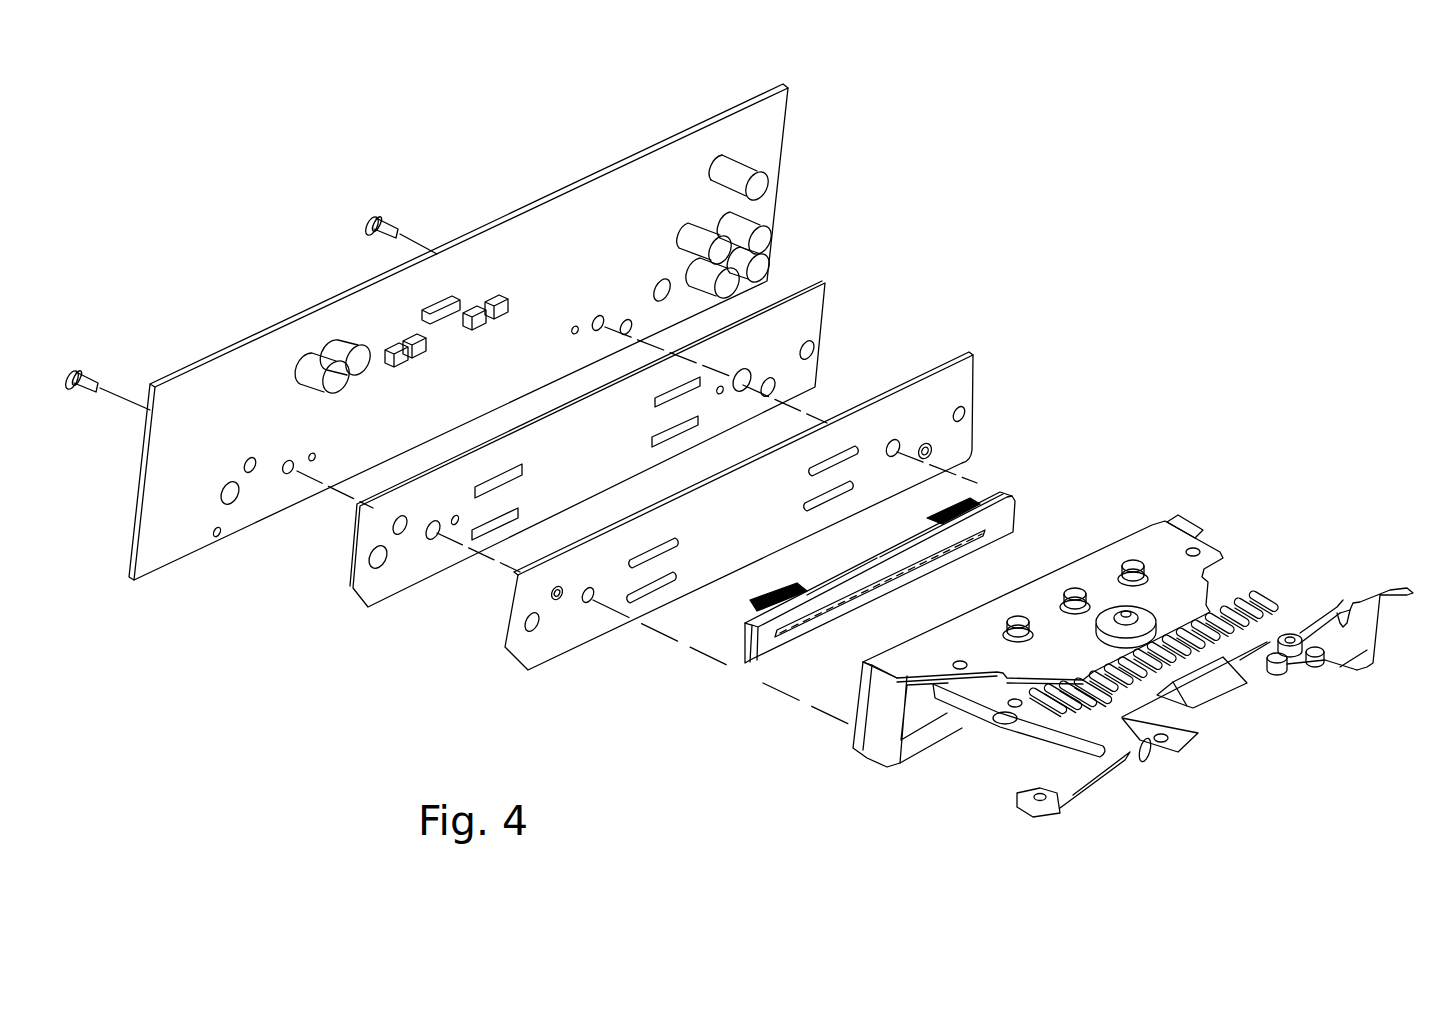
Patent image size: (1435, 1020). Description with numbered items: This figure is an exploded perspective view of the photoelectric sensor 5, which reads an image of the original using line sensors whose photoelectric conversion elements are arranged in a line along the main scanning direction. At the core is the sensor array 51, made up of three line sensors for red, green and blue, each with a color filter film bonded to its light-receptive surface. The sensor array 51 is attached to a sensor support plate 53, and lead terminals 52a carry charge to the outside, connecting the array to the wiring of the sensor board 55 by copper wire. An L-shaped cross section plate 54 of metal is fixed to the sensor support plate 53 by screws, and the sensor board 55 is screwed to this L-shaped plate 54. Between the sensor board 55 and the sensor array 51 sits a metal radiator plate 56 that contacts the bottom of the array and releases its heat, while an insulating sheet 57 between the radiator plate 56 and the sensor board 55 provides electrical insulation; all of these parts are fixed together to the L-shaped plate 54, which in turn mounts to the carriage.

The photoelectric sensor 5 is at (1012, 292).
The sensor array 51 is at (893, 581).
The lead terminals 52a is at (980, 500).
The sensor support plate 53 is at (975, 717).
The L-shaped cross section plate 54 is at (1140, 540).
The sensor board 55 is at (162, 548).
The radiator plate 56 is at (542, 647).
The insulating sheet 57 is at (390, 580).